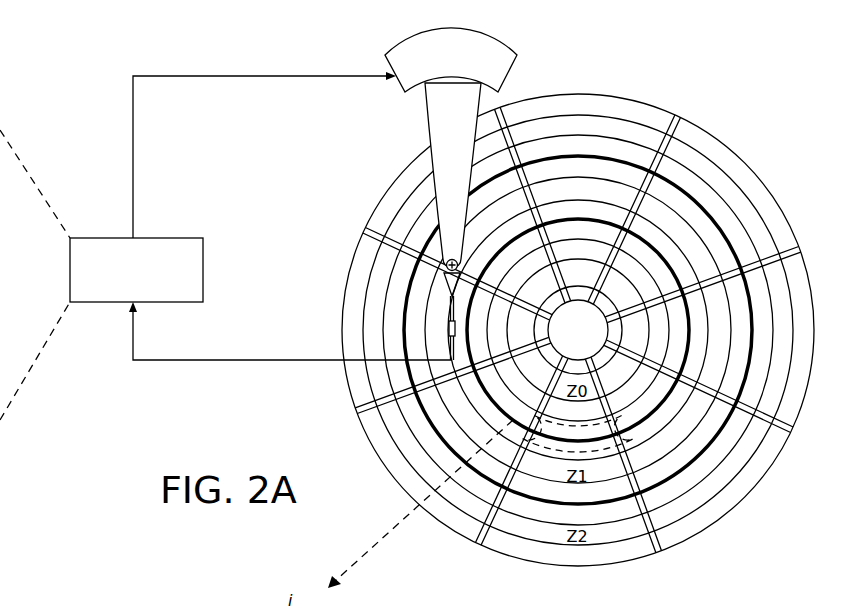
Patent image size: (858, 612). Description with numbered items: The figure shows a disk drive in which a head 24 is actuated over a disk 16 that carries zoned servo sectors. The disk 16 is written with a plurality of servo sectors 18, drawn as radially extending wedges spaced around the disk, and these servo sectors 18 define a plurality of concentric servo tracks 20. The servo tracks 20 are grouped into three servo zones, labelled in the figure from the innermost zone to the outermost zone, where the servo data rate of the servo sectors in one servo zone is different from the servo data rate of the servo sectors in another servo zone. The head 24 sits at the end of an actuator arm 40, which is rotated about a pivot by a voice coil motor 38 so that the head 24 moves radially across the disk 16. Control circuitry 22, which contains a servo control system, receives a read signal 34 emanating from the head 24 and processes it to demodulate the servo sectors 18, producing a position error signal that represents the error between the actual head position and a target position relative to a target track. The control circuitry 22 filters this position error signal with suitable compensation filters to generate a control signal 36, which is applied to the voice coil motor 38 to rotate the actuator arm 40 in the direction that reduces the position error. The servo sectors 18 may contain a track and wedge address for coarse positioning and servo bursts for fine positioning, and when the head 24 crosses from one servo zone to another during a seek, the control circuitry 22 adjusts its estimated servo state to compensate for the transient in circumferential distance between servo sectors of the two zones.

The disk 16 is at (580, 321).
The servo sectors 18 is at (580, 333).
The servo tracks 20 is at (580, 125).
The control circuitry 22 is at (170, 238).
The head 24 is at (441, 327).
The read signal 34 is at (250, 360).
The control signal 36 is at (133, 147).
The voice coil motor 38 is at (405, 92).
The actuator arm 40 is at (433, 139).